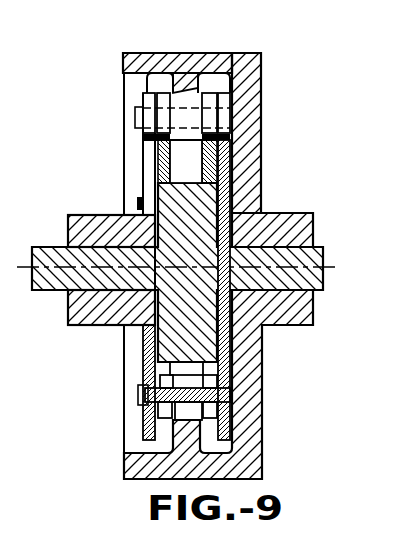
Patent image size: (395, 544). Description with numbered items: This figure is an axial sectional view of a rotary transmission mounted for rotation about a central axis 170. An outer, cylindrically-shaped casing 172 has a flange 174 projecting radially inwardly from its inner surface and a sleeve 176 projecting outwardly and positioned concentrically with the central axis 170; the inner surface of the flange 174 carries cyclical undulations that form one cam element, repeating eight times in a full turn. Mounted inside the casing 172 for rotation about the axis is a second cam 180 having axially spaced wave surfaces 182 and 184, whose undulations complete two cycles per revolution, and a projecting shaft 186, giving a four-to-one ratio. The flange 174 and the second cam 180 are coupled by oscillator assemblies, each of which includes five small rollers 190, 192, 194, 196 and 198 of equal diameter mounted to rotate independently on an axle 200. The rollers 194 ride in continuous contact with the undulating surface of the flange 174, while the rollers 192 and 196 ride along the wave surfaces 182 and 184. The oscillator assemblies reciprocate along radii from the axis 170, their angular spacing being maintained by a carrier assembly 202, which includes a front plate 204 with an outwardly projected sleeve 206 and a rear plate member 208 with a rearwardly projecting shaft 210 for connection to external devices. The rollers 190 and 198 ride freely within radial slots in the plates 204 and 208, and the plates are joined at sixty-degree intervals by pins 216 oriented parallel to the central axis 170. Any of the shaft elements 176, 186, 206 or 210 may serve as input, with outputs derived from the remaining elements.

The central axis 170 is at (21, 267).
The casing 172 is at (126, 53).
The flange 174 is at (123, 73).
The sleeve 176 is at (270, 213).
The second cam 180 is at (121, 195).
The wave surface 182 is at (143, 137).
The wave surface 184 is at (258, 133).
The projecting shaft 186 is at (67, 291).
The roller 190 is at (174, 102).
The roller 192 is at (177, 90).
The roller 194 is at (186, 91).
The roller 196 is at (213, 92).
The roller 198 is at (241, 57).
The axle 200 is at (147, 107).
The carrier assembly 202 is at (138, 362).
The front plate 204 is at (155, 373).
The outwardly projected sleeve 206 is at (70, 326).
The rear plate member 208 is at (225, 367).
The rearwardly projecting shaft 210 is at (293, 274).
The pin 216 is at (143, 400).